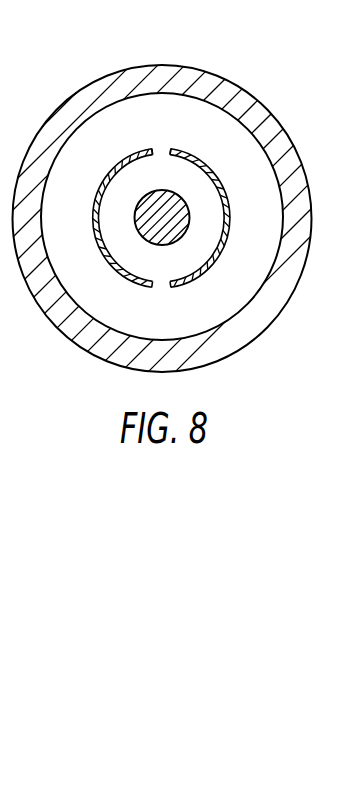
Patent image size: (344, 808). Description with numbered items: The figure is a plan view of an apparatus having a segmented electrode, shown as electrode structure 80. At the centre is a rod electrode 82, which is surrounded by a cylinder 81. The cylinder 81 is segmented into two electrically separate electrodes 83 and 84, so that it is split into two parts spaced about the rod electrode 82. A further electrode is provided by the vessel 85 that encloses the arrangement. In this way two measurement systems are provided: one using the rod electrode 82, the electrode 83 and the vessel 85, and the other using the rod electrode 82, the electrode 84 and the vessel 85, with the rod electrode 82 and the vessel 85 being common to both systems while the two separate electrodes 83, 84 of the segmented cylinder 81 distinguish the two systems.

The electrode structure 80 is at (231, 362).
The cylinder 81 is at (160, 146).
The rod electrode 82 is at (184, 197).
The electrode 83 is at (211, 275).
The electrode 84 is at (118, 273).
The vessel 85 is at (99, 352).